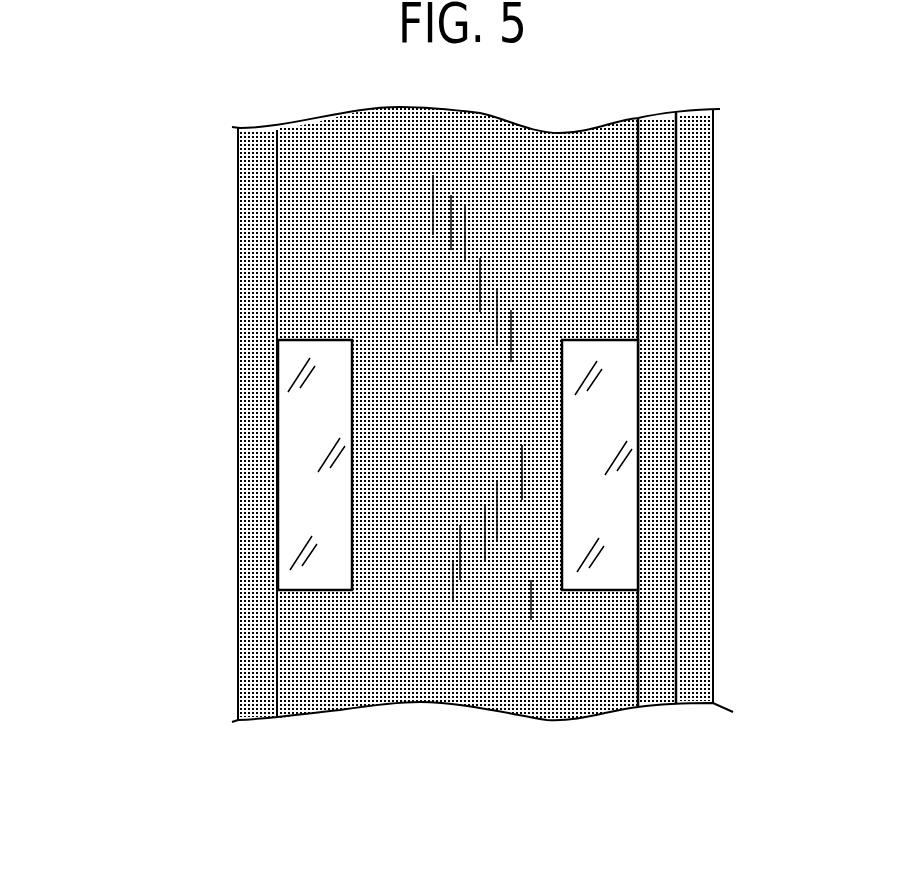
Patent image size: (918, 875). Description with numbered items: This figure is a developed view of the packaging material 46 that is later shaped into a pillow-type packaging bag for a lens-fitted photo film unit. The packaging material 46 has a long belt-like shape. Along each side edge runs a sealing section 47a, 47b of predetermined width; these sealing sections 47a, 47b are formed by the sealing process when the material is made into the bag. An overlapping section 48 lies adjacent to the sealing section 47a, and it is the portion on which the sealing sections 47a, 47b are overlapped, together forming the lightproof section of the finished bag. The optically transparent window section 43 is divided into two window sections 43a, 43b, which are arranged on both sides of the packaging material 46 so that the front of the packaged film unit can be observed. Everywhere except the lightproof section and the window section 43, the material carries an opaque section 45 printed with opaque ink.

The packaging material 46 is at (200, 203).
The opaque section 45 is at (425, 258).
The sealing section 47a is at (265, 435).
The sealing section 47b is at (690, 452).
The overlapping section 48 is at (653, 279).
The window section 43 is at (458, 586).
The window section 43a is at (333, 505).
The window section 43b is at (585, 495).